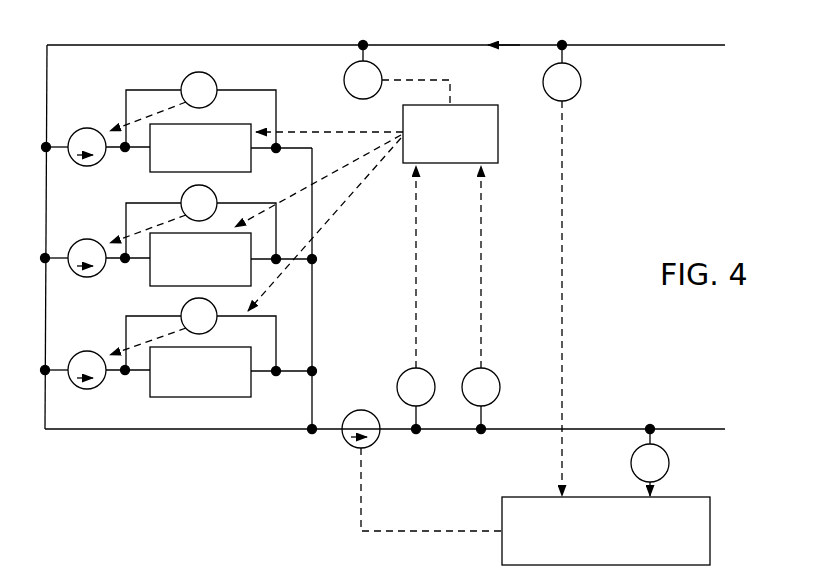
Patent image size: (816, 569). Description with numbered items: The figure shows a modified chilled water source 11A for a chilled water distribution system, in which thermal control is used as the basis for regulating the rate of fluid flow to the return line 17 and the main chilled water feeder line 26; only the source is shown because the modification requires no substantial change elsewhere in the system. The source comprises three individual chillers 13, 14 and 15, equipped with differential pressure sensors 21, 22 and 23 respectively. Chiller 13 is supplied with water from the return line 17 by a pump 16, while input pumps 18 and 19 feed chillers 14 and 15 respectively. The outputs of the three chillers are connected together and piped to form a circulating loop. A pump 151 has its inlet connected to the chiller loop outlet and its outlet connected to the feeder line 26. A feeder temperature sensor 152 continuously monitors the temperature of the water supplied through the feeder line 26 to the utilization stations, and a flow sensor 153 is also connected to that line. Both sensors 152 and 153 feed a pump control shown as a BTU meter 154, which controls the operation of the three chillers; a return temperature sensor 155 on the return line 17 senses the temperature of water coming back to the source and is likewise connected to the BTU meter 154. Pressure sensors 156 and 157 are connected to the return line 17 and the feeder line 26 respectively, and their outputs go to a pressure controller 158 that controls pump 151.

The chilled water source 11A is at (137, 55).
The chiller 13 is at (230, 124).
The chiller 14 is at (248, 244).
The chiller 15 is at (250, 348).
The pump 16 is at (88, 128).
The return line 17 is at (340, 44).
The input pump 18 is at (85, 239).
The input pump 19 is at (78, 353).
The differential pressure sensor 21 is at (218, 83).
The differential pressure sensor 22 is at (218, 194).
The differential pressure sensor 23 is at (182, 308).
The main chilled water feeder line 26 is at (447, 431).
The pump 151 is at (348, 445).
The feeder temperature sensor 152 is at (405, 374).
The flow sensor 153 is at (494, 374).
The BTU meter 154 is at (461, 163).
The return temperature sensor 155 is at (397, 75).
The pressure sensor 156 is at (581, 89).
The pressure sensor 157 is at (670, 462).
The pressure controller 158 is at (712, 521).